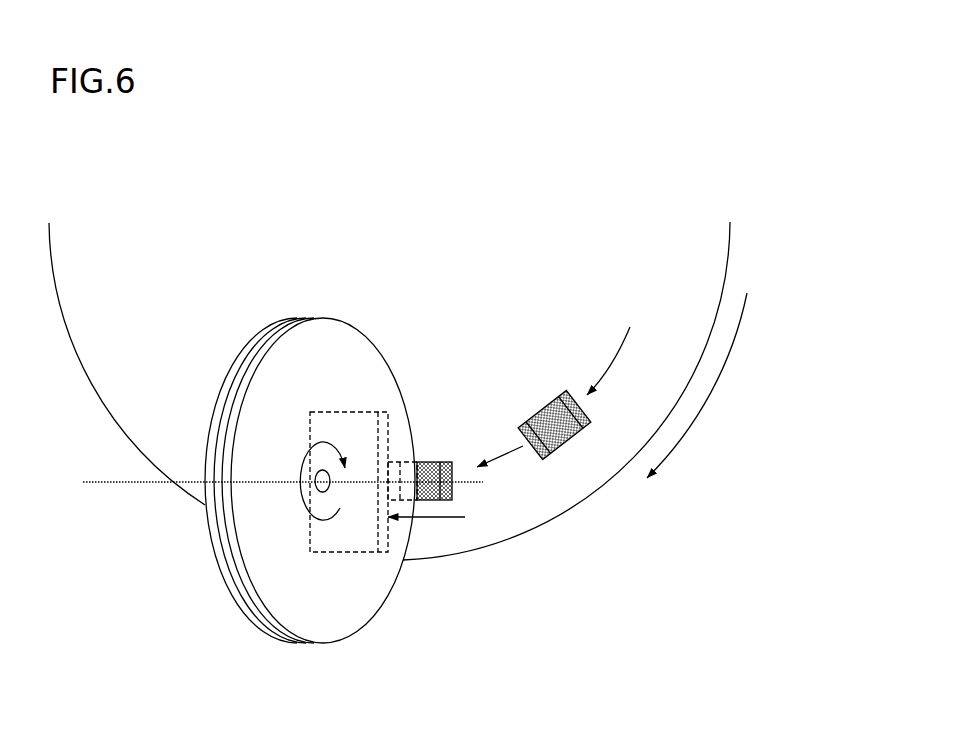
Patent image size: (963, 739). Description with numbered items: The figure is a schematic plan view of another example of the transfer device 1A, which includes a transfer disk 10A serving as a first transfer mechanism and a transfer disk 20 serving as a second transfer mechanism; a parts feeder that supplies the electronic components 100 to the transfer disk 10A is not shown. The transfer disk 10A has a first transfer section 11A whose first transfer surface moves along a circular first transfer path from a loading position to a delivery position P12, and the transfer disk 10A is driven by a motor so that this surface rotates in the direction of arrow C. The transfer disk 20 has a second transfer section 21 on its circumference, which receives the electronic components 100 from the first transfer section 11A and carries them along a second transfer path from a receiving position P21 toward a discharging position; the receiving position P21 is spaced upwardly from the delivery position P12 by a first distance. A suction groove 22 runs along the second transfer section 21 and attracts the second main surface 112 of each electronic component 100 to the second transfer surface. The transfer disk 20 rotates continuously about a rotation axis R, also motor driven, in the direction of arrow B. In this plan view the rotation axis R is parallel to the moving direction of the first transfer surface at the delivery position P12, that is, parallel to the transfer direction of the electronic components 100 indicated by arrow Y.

The transfer device 1A is at (700, 178).
The transfer disk 10A is at (733, 258).
The first transfer section 11A is at (578, 488).
The transfer disk 20 is at (315, 307).
The second transfer section 21 is at (238, 358).
The suction groove 22 is at (255, 347).
The electronic component 100 is at (453, 457).
The second main surface 112 is at (430, 455).
The receiving position P21 is at (412, 472).
The delivery position P12 is at (453, 457).
The rotation axis R is at (271, 482).
The arrow B is at (315, 473).
The arrow C is at (697, 385).
The arrow Y is at (426, 532).